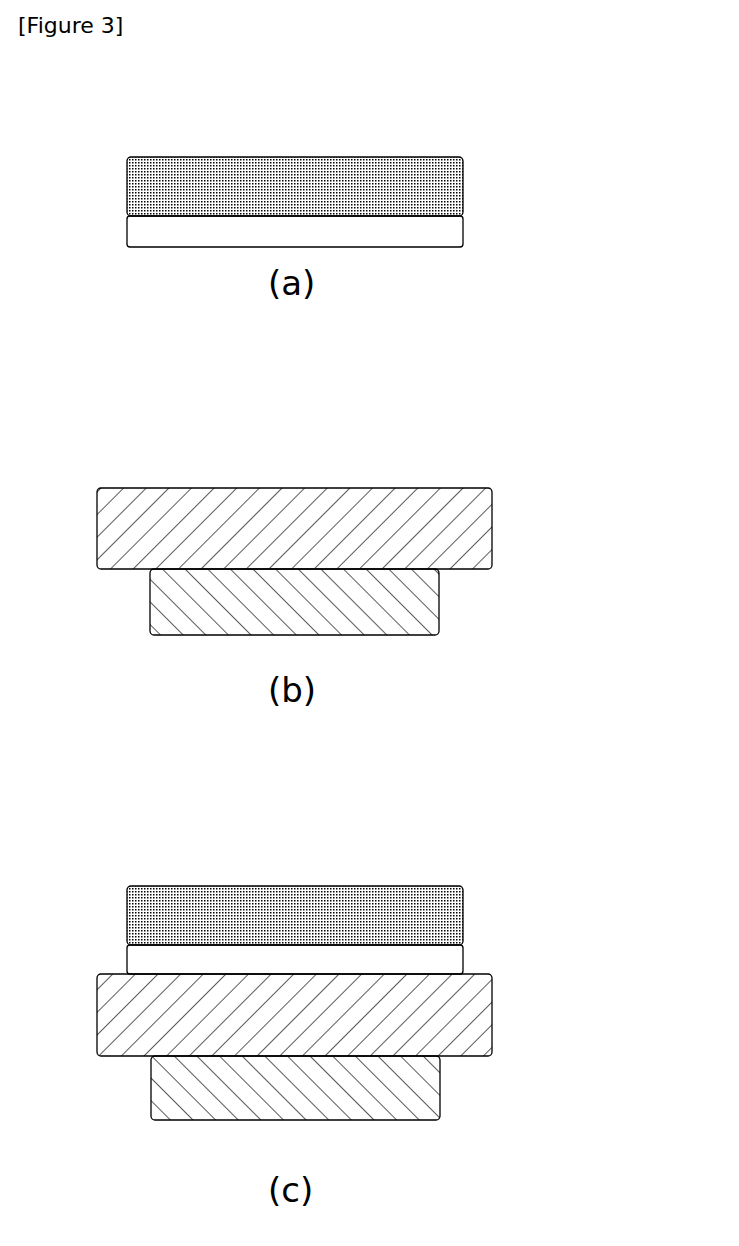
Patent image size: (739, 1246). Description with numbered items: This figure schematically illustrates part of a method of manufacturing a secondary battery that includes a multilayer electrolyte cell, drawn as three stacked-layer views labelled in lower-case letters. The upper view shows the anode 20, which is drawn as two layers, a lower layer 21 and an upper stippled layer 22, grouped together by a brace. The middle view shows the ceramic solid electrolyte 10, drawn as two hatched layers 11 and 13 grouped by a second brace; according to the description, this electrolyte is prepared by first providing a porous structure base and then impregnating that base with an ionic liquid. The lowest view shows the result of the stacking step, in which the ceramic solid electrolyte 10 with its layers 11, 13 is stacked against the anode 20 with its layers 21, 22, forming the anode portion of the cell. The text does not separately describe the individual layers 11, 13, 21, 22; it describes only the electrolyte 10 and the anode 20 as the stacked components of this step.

The ceramic solid electrolyte 10 is at (393, 804).
The electrode substrate 11 is at (492, 530).
The electrode layer 13 is at (439, 608).
The anode 20 is at (393, 568).
The separator base layer 21 is at (463, 228).
The coating layer 22 is at (463, 184).